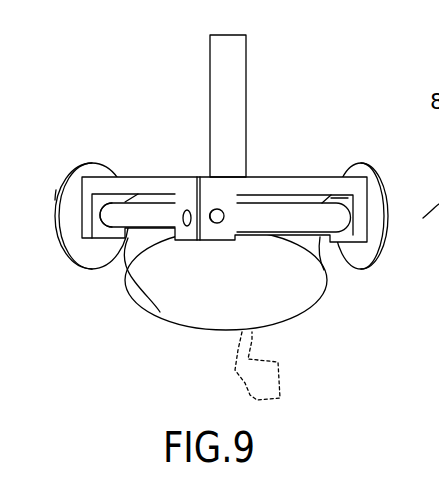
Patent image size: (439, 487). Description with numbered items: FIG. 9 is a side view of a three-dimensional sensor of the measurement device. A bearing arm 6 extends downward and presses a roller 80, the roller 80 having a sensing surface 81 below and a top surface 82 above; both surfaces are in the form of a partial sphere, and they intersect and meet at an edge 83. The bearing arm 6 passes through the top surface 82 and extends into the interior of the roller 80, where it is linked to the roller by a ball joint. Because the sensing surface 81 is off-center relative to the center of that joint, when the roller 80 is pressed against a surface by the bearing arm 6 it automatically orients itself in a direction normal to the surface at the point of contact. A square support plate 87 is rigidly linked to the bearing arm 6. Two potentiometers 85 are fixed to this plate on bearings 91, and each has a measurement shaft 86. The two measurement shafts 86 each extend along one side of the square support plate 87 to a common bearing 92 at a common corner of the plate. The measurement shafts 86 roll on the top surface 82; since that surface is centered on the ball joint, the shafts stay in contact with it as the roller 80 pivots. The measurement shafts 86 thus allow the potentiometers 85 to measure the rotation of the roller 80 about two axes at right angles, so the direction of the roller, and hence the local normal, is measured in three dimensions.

The bearing arm 6 is at (224, 77).
The roller 80 is at (293, 320).
The sensing surface 81 is at (167, 287).
The top surface 82 is at (127, 292).
The edge 83 is at (324, 270).
The potentiometers 85 is at (80, 167).
The measurement shaft 86 is at (110, 218).
The square support plate 87 is at (290, 177).
The bearings 91 is at (56, 197).
The common bearing 92 is at (185, 203).